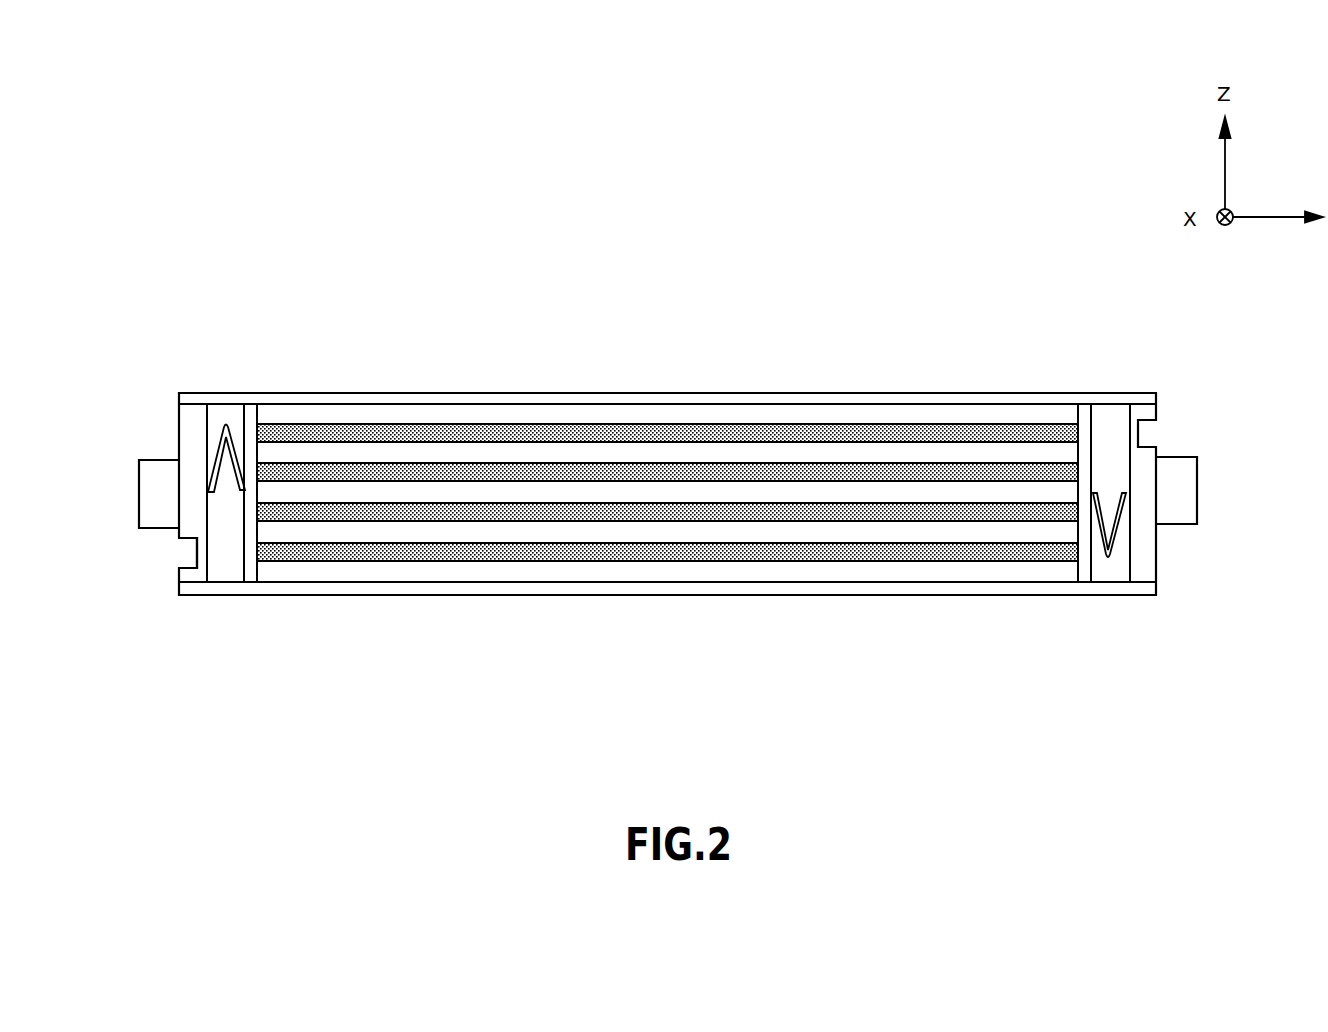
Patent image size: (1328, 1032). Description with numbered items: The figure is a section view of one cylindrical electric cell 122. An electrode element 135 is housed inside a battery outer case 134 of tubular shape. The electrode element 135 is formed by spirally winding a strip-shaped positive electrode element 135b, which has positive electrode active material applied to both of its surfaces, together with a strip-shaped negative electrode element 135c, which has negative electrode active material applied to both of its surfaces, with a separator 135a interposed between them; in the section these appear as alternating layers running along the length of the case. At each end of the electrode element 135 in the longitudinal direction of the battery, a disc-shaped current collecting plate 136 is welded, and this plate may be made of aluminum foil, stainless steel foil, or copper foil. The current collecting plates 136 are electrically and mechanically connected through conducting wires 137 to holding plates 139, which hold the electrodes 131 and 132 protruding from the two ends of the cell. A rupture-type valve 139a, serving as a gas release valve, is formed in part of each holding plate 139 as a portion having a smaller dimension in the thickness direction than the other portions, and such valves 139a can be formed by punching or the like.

The cylindrical electric cell 122 is at (672, 325).
The electrode 131 is at (157, 473).
The electrode 132 is at (1183, 515).
The battery outer case 134 is at (503, 391).
The electrode element 135 is at (669, 443).
The separator 135a is at (935, 450).
The positive electrode element 135b is at (878, 468).
The negative electrode element 135c is at (990, 428).
The current collecting plate 136 is at (253, 567).
The conducting wire 137 is at (214, 440).
The holding plate 139 is at (187, 510).
The rupture-type valve 139a is at (183, 540).